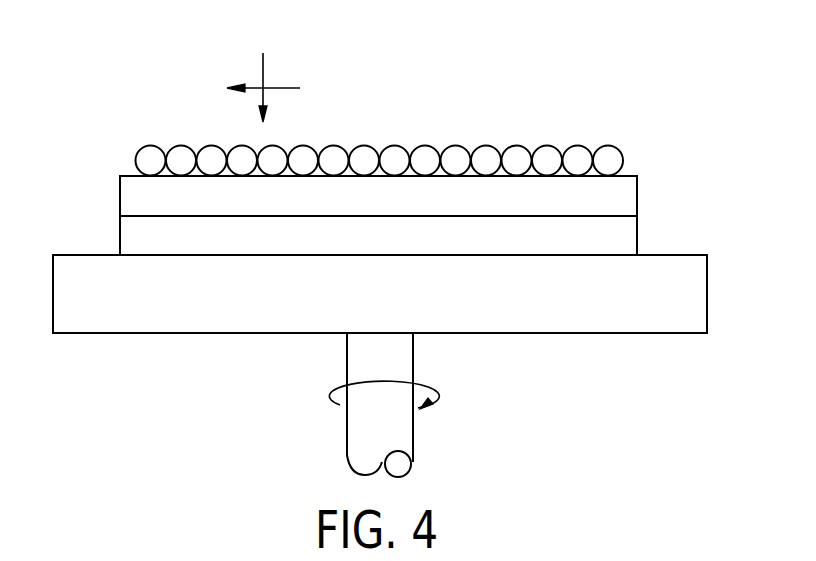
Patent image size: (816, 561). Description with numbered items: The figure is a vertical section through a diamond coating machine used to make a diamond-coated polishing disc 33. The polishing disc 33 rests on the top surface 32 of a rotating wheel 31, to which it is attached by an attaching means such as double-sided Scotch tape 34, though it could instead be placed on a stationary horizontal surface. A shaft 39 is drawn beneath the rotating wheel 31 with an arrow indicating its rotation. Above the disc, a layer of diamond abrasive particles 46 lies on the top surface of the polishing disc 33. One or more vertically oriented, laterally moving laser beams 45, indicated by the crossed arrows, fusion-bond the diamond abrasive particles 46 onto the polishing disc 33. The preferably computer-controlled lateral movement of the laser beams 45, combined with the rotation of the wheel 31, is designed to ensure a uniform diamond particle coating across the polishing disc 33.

The rotating wheel 31 is at (707, 265).
The top surface of the rotating wheel 32 is at (77, 255).
The polishing disc 33 is at (637, 186).
The double-sided Scotch tape 34 is at (637, 228).
The rotating shaft 39 is at (367, 440).
The laser beams 45 is at (267, 68).
The diamond abrasive particles 46 is at (506, 148).